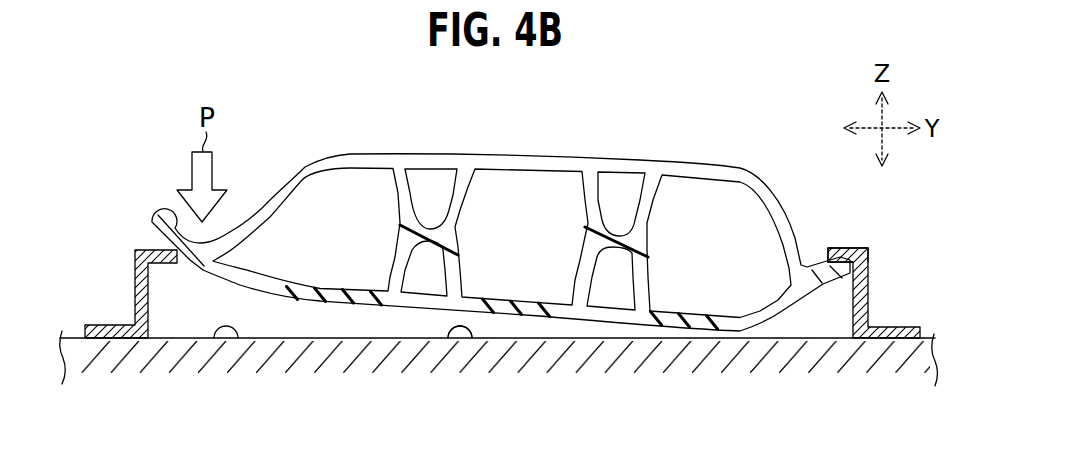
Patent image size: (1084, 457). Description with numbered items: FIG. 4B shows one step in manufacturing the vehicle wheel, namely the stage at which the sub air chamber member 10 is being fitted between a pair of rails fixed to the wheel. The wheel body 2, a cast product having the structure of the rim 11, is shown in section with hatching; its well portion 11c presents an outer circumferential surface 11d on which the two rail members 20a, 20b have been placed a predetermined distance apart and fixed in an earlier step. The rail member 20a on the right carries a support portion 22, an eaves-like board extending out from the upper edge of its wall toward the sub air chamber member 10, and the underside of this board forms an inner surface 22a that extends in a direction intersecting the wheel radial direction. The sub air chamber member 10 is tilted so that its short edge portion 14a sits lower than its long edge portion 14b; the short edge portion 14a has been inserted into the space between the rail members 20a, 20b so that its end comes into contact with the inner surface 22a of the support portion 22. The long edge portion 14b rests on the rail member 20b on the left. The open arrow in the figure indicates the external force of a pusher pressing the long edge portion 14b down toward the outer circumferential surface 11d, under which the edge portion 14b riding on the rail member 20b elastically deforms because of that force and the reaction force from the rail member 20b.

The wheel body 2 is at (698, 351).
The sub air chamber member 10 is at (539, 152).
The rim 11 is at (227, 338).
The well portion 11c is at (462, 338).
The outer circumferential surface 11d is at (462, 338).
The short edge portion 14a is at (838, 288).
The long edge portion 14b is at (165, 236).
The rail member 20a is at (867, 302).
The rail member 20b is at (136, 305).
The support portion 22 is at (850, 247).
The inner surface 22a is at (822, 266).